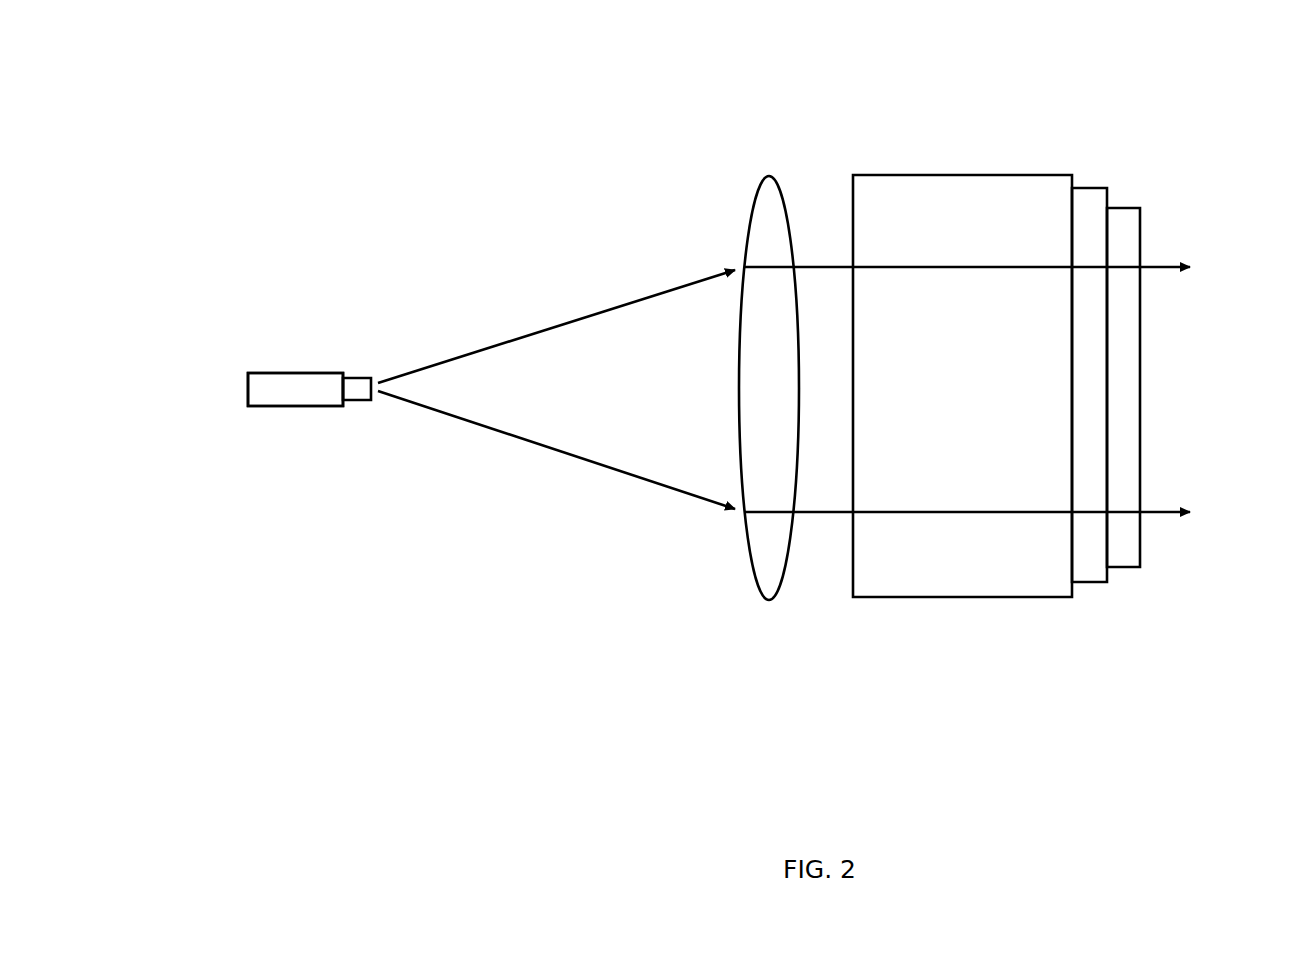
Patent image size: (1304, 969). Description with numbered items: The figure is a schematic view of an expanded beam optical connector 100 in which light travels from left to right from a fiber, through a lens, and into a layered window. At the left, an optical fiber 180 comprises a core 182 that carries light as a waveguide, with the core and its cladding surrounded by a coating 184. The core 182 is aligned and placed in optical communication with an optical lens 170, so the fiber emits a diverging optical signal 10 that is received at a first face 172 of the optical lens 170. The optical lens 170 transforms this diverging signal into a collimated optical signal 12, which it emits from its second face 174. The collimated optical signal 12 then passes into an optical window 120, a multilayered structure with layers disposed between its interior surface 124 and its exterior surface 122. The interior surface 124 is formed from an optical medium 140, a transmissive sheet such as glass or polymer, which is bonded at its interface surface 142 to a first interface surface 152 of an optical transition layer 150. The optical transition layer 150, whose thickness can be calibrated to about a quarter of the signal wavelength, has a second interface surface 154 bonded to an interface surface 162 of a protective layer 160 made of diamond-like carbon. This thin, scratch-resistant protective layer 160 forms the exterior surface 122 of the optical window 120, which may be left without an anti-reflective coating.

The expanded beam optical connector 100 is at (513, 113).
The diverging optical signal 10 is at (542, 312).
The collimated optical signal 12 is at (992, 256).
The optical window 120 is at (1031, 377).
The exterior surface 122 is at (1140, 313).
The interior surface 124 is at (853, 597).
The optical medium 140 is at (921, 377).
The interface surface 142 is at (1072, 305).
The optical transition layer 150 is at (1112, 359).
The first interface surface 152 is at (1072, 383).
The second interface surface 154 is at (1107, 447).
The protective layer 160 is at (1170, 361).
The interface surface 162 is at (1107, 345).
The optical lens 170 is at (725, 363).
The first face 172 is at (740, 320).
The second face 174 is at (798, 360).
The optical fiber 180 is at (313, 368).
The core 182 is at (368, 400).
The coating 184 is at (305, 373).